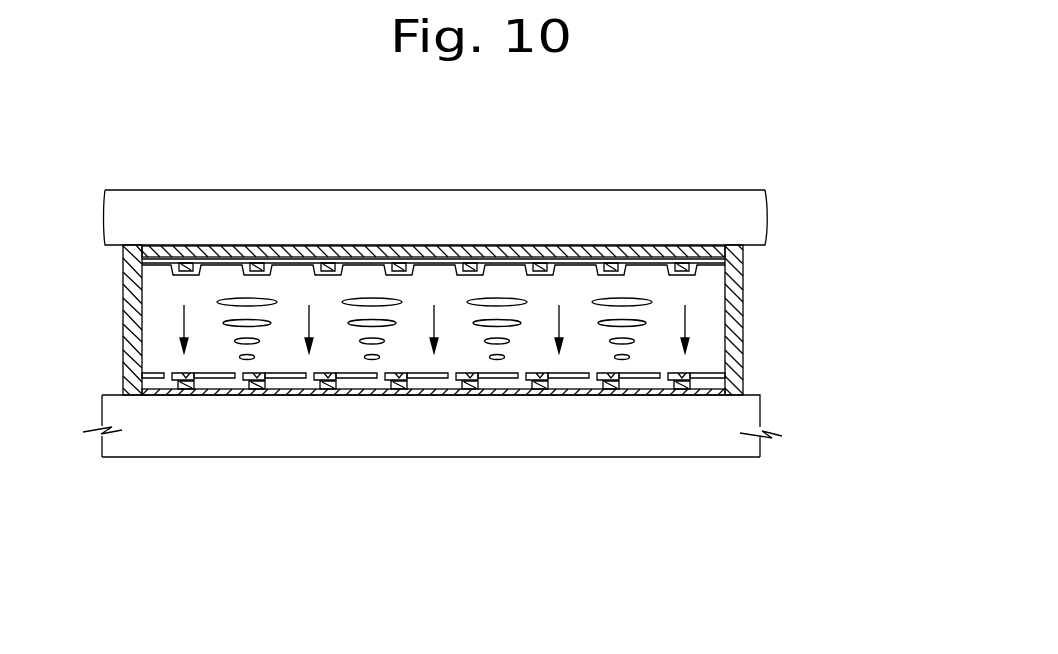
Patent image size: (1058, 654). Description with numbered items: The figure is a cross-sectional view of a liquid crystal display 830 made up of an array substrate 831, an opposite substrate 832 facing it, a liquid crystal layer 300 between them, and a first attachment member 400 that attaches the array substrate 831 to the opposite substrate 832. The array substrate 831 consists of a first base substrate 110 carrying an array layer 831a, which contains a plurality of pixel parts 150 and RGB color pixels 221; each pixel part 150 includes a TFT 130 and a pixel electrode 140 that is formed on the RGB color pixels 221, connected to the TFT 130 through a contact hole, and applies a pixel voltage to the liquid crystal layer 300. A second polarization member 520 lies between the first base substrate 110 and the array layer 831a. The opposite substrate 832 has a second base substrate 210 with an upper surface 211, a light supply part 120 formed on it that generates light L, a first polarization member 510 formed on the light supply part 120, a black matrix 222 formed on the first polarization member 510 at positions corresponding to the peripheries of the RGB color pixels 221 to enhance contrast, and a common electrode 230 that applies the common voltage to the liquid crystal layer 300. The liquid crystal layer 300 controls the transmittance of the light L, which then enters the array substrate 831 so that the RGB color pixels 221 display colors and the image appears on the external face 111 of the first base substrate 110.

The liquid crystal display 830 is at (698, 100).
The array substrate 831 is at (340, 607).
The array layer 831a is at (428, 563).
The opposite substrate 832 is at (857, 205).
The first base substrate 110 is at (358, 450).
The external face 111 is at (666, 458).
The light supply part 120 is at (715, 250).
The TFT 130 is at (470, 392).
The pixel electrode 140 is at (490, 379).
The pixel part 150 is at (405, 520).
The second base substrate 210 is at (760, 212).
The upper surface of upper substrate 211 is at (597, 190).
The RGB color pixel 221 is at (512, 390).
The black matrix 222 is at (684, 268).
The common electrode 230 is at (715, 263).
The liquid crystal layer 300 is at (155, 310).
The first attachment member 400 is at (128, 337).
The first polarization member 510 is at (423, 253).
The second polarization member 520 is at (282, 394).
The light L is at (180, 303).